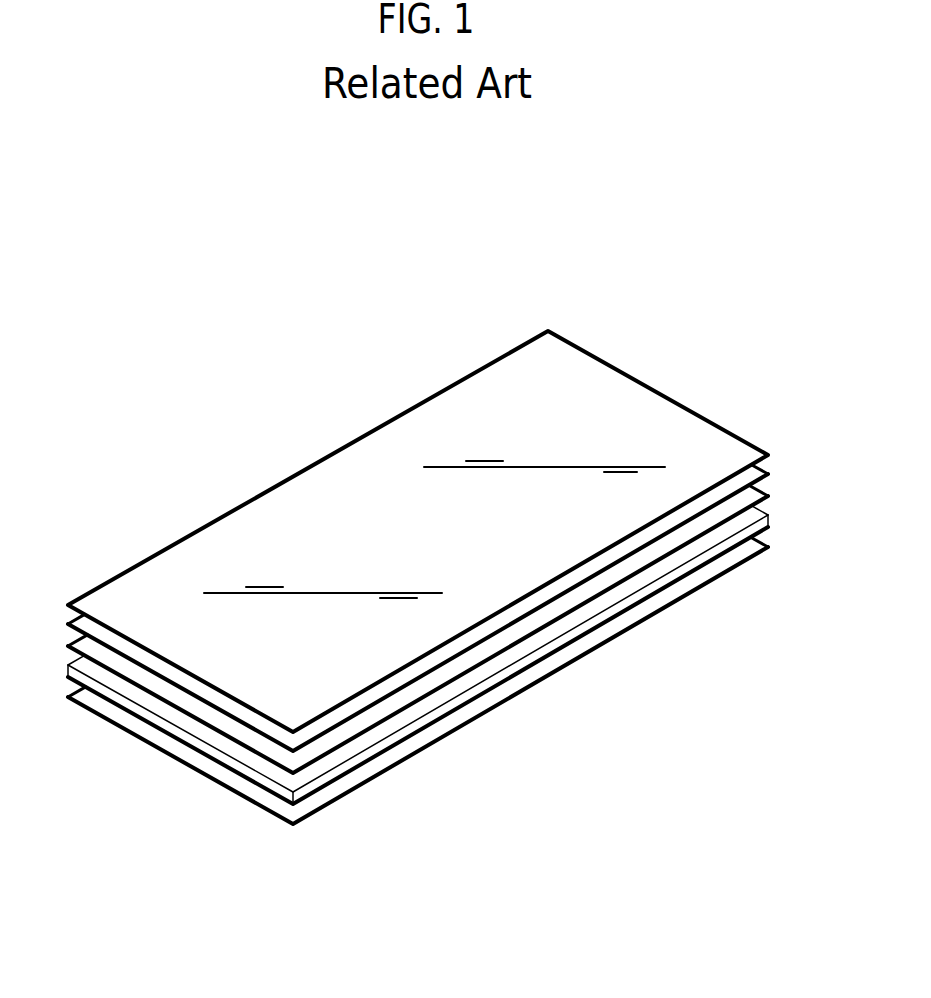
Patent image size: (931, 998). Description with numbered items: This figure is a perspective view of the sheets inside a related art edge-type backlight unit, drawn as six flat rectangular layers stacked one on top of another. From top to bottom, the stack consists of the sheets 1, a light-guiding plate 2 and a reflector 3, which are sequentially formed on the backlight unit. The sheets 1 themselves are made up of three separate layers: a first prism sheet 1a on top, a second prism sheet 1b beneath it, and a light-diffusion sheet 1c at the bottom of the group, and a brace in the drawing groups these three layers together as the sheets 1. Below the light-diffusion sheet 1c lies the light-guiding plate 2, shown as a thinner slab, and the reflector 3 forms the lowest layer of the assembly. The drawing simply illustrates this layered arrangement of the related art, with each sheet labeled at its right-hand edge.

The sheets 1 is at (462, 552).
The first prism sheet 1a is at (770, 455).
The second prism sheet 1b is at (770, 474).
The light-diffusion sheet 1c is at (770, 496).
The light-guiding plate 2 is at (770, 521).
The reflector 3 is at (770, 547).